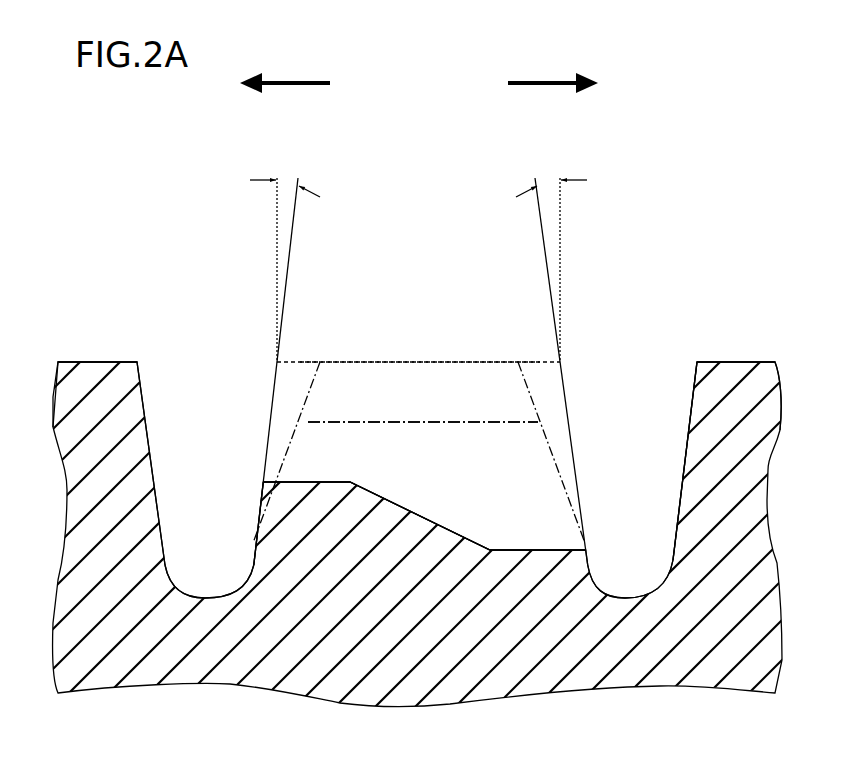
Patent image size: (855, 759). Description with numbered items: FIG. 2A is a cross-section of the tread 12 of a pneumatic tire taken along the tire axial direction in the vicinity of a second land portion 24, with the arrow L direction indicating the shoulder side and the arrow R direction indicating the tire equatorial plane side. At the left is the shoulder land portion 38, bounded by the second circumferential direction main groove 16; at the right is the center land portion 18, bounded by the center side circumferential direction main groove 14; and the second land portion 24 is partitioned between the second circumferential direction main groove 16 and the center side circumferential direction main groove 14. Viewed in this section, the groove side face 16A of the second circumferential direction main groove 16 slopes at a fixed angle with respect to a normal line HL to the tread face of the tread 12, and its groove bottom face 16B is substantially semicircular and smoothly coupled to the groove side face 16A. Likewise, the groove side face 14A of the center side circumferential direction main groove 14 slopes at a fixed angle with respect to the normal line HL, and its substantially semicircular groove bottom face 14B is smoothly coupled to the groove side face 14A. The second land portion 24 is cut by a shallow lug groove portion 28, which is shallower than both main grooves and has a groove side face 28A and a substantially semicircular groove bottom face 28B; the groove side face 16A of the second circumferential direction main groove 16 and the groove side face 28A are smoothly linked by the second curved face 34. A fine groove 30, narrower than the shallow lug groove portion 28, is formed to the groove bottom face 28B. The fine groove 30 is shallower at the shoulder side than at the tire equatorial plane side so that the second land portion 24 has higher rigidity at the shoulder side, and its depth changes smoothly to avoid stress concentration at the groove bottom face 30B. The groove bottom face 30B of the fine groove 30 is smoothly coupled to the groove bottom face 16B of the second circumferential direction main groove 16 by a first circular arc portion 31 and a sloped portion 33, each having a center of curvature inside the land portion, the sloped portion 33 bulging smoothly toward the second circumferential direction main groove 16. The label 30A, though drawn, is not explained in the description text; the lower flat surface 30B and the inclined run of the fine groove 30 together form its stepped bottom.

The tread 12 is at (78, 355).
The shoulder land portion 38 is at (102, 360).
The second circumferential direction main groove 16 is at (143, 382).
The groove side face 16A is at (267, 393).
The groove bottom face 16B is at (187, 592).
The second curved face 34 is at (288, 380).
The normal line HL is at (277, 205).
The arrow L direction L is at (292, 82).
The arrow R direction R is at (553, 82).
The second land portion 24 is at (402, 362).
The groove side face 28A is at (345, 372).
The shallow lug groove portion 28 is at (433, 378).
The groove bottom face 28B is at (342, 421).
The first circular arc portion 31 is at (280, 483).
The sloped portion 33 is at (263, 508).
The fine groove 30 is at (531, 476).
The inclined surface of center block 30A is at (417, 495).
The groove bottom face 30B is at (535, 550).
The center side circumferential direction main groove 14 is at (694, 386).
The groove side face 14A is at (688, 447).
The groove bottom face 14B is at (622, 597).
The center land portion 18 is at (752, 362).